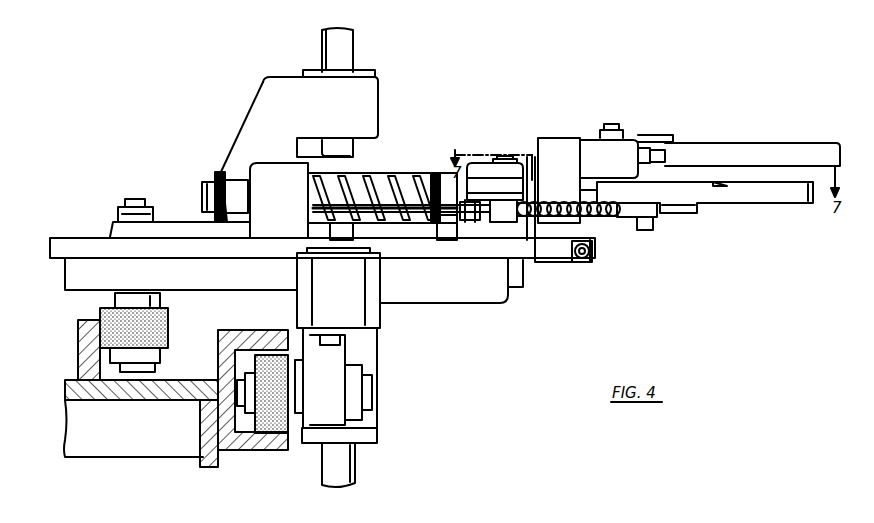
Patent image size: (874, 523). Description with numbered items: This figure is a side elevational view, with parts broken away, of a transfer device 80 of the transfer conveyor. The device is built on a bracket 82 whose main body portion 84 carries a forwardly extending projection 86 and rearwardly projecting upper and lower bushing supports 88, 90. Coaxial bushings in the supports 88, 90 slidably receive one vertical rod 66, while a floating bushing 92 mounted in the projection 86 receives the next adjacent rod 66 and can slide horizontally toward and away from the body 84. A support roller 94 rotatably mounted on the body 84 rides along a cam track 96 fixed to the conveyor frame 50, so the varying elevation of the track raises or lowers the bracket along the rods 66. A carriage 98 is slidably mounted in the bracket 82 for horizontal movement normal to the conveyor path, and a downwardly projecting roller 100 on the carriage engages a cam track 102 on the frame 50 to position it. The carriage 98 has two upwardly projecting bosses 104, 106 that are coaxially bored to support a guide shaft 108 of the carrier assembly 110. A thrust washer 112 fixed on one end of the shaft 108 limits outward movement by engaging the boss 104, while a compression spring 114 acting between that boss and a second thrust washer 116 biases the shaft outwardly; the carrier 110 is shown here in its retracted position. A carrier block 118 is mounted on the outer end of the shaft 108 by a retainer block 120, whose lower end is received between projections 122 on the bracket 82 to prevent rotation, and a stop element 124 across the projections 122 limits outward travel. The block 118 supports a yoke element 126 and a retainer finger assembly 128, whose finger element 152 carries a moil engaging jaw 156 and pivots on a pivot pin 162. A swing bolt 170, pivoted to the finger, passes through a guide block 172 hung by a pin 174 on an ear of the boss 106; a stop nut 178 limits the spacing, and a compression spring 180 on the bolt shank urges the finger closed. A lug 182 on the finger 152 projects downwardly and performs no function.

The conveyor frame 50 is at (140, 475).
The rod 66 is at (350, 484).
The transfer device 80 is at (410, 340).
The bracket 82 is at (227, 281).
The main body portion 84 is at (452, 304).
The forwardly extending projection 86 is at (383, 318).
The upper bushing support 88 is at (368, 106).
The lower bushing support 90 is at (378, 438).
The floating bushing 92 is at (350, 302).
The support roller 94 is at (278, 409).
The cam track 96 is at (250, 451).
The carriage 98 is at (181, 233).
The roller 100 is at (168, 324).
The cam track 102 is at (76, 324).
The boss 104 is at (280, 165).
The boss 106 is at (484, 165).
The guide shaft 108 is at (408, 183).
The carrier assembly 110 is at (657, 133).
The thrust washer 112 is at (219, 172).
The compression spring 114 is at (365, 180).
The second thrust washer 116 is at (441, 172).
The carrier block 118 is at (563, 145).
The retainer block 120 is at (556, 243).
The projections 122 is at (533, 265).
The stop element 124 is at (586, 262).
The support yoke element 126 is at (803, 142).
The retainer finger assembly 128 is at (780, 204).
The finger element 152 is at (715, 192).
The moil engaging jaw 156 is at (645, 231).
The pivot pin 162 is at (614, 124).
The swing bolt 170 is at (533, 178).
The guide block 172 is at (500, 222).
The pin 174 is at (507, 160).
The stop nut 178 is at (470, 222).
The compression spring 180 is at (605, 222).
The lug 182 is at (683, 213).